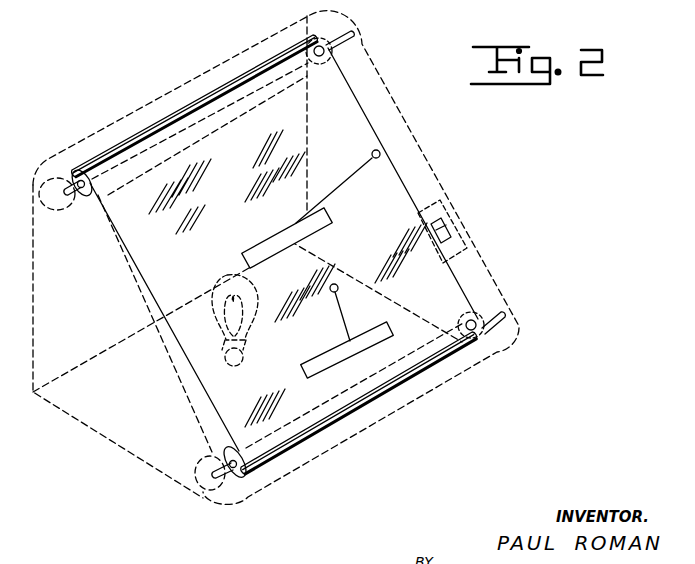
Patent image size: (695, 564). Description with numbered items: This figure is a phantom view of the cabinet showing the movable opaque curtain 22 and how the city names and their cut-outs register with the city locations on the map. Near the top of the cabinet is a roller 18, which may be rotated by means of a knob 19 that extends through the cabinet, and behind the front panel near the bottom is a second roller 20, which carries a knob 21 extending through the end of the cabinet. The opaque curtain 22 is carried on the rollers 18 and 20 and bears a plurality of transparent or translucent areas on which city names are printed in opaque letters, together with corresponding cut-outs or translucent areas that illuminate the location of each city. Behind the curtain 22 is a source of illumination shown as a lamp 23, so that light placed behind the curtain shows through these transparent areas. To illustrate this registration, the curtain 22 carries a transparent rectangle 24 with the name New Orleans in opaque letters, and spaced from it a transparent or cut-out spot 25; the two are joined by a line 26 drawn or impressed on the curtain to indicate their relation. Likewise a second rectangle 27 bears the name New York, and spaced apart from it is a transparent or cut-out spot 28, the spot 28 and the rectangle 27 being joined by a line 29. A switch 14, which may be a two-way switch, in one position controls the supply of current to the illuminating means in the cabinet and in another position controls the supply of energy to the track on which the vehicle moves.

The switch 14 is at (453, 218).
The roller 18 is at (76, 177).
The knob 19 is at (63, 211).
The second roller 20 is at (249, 495).
The knob 21 is at (206, 498).
The opaque curtain 22 is at (390, 174).
The lamp 23 is at (222, 357).
The transparent rectangle 24 is at (362, 335).
The transparent or cut-out spot 25 is at (331, 292).
The line 26 is at (345, 305).
The second rectangle 27 is at (320, 231).
The transparent or cut-out spot 28 is at (374, 150).
The line 29 is at (348, 180).